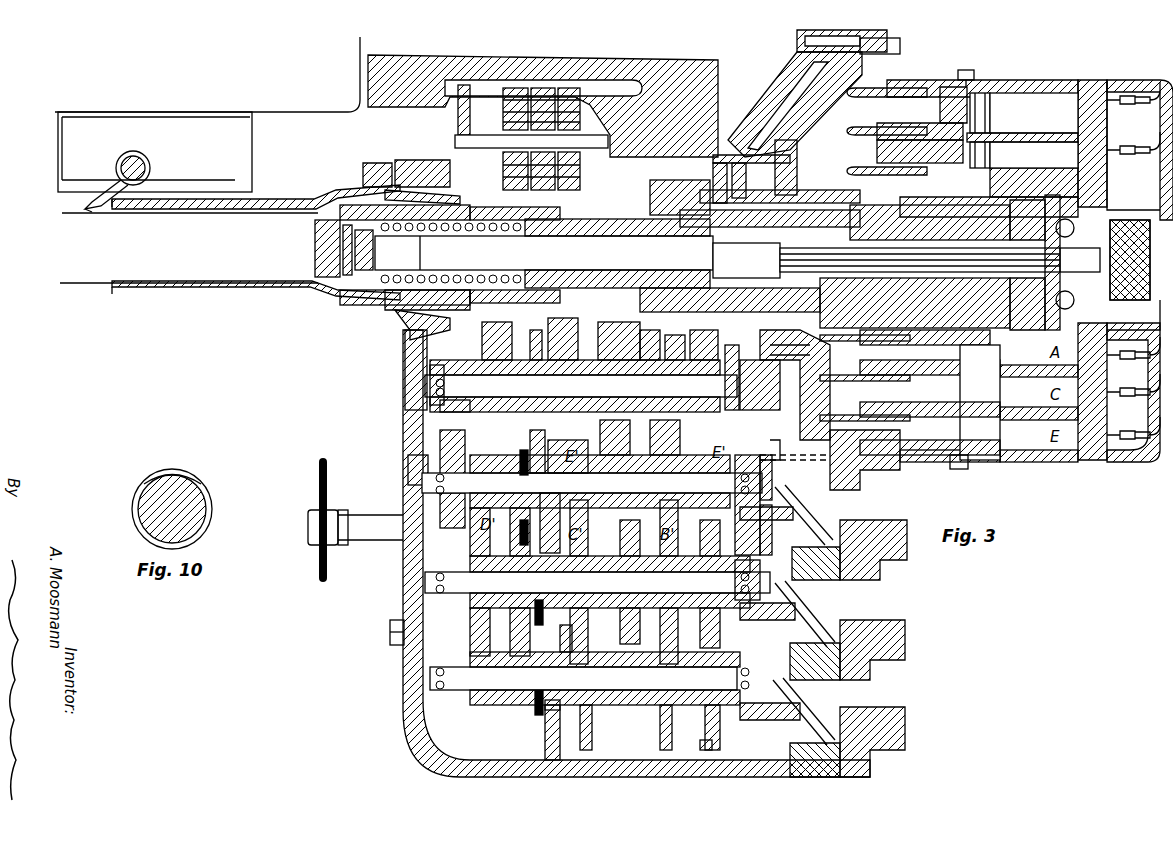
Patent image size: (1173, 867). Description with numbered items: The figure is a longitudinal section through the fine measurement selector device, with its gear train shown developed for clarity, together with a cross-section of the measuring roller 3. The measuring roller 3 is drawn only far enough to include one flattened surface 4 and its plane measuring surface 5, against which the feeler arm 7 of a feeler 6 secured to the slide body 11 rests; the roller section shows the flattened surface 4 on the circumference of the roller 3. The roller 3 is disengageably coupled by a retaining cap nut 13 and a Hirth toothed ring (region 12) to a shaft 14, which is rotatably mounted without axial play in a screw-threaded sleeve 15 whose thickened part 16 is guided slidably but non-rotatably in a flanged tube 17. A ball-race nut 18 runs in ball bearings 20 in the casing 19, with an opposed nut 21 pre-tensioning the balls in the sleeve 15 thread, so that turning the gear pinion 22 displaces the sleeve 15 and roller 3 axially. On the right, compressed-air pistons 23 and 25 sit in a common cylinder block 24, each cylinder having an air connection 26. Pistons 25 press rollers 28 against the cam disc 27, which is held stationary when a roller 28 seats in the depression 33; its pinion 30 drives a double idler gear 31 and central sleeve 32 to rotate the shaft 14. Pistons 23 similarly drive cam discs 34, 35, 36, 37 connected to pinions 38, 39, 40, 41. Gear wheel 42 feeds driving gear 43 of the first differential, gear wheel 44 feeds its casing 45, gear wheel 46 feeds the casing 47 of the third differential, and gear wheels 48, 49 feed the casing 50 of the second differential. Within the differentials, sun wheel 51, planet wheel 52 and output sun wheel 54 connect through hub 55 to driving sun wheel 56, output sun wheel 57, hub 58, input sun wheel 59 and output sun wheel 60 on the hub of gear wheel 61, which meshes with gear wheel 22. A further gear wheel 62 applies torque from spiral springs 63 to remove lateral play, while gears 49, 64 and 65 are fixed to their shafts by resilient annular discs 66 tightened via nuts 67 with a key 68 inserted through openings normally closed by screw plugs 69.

In FIG. 3, the measuring roller 3 is at (103, 273).
In FIG. 10, the measuring roller 3 is at (188, 486).
In FIG. 3, the flattened surface 4 is at (85, 207).
In FIG. 10, the flattened surface 4 is at (148, 498).
In FIG. 3, the measuring surface 5 is at (90, 208).
In FIG. 3, the feeler 6 is at (114, 118).
In FIG. 3, the feeler arm 7 is at (105, 185).
In FIG. 3, the slide body 11 is at (300, 100).
In FIG. 3, the hub 12 is at (318, 270).
In FIG. 3, the retaining cap nut 13 is at (345, 278).
In FIG. 3, the shaft 14 is at (360, 280).
In FIG. 3, the screw-threaded sleeve 15 is at (635, 233).
In FIG. 3, the thickened part 16 is at (720, 225).
In FIG. 3, the flanged tube 17 is at (595, 222).
In FIG. 3, the nut 18 is at (395, 305).
In FIG. 3, the casing 19 is at (405, 75).
In FIG. 3, the ball bearings 20 is at (412, 335).
In FIG. 3, the bearing ring 21 is at (530, 214).
In FIG. 3, the gear pinion 22 is at (466, 208).
In FIG. 3, the compressed-air-operated piston 23 is at (978, 95).
In FIG. 3, the cylinder block 24 is at (1032, 85).
In FIG. 3, the piston 25 is at (965, 355).
In FIG. 3, the connection 26 is at (1127, 96).
In FIG. 3, the cam disc 27 is at (968, 72).
In FIG. 3, the roller 28 is at (880, 345).
In FIG. 3, the pinion 30 is at (945, 300).
In FIG. 3, the double idler gear 31 is at (1035, 165).
In FIG. 3, the central sleeve 32 is at (1010, 290).
In FIG. 3, the depression 33 is at (805, 440).
In FIG. 3, the cam disc 34 is at (958, 469).
In FIG. 3, the cam disc 35 is at (925, 138).
In FIG. 3, the cam disc 36 is at (900, 420).
In FIG. 3, the cam disc 37 is at (905, 90).
In FIG. 3, the pinion 38 is at (718, 140).
In FIG. 3, the pinion 39 is at (722, 160).
In FIG. 3, the pinion 40 is at (740, 165).
In FIG. 3, the pinion 41 is at (760, 150).
In FIG. 3, the gear wheel 42 is at (715, 360).
In FIG. 3, the driving gear 43 is at (728, 345).
In FIG. 3, the gear wheel 44 is at (722, 705).
In FIG. 3, the differential casing 45 is at (610, 440).
In FIG. 3, the gear wheel 46 is at (730, 605).
In FIG. 3, the differential casing 47 is at (470, 445).
In FIG. 3, the gear wheel 48 is at (745, 510).
In FIG. 3, the gear wheel 49 is at (548, 515).
In FIG. 3, the differential casing 50 is at (535, 455).
In FIG. 3, the sun wheel 51 is at (700, 330).
In FIG. 3, the planet wheel 52 is at (672, 335).
In FIG. 3, the output sun wheel 54 is at (648, 328).
In FIG. 3, the hub 55 is at (610, 320).
In FIG. 3, the driving sun wheel 56 is at (575, 355).
In FIG. 3, the output sun wheel 57 is at (545, 355).
In FIG. 3, the hub 58 is at (530, 325).
In FIG. 3, the input sun wheel 59 is at (445, 405).
In FIG. 3, the output sun wheel 60 is at (440, 380).
In FIG. 3, the gear wheel 61 is at (440, 360).
In FIG. 3, the gear wheel 62 is at (464, 85).
In FIG. 3, the spiral springs 63 is at (510, 88).
In FIG. 3, the gear teeth 64 is at (512, 625).
In FIG. 3, the gear teeth 65 is at (548, 705).
In FIG. 3, the resilient annular disc 66 is at (522, 510).
In FIG. 3, the nut 67 is at (410, 445).
In FIG. 3, the key 68 is at (330, 518).
In FIG. 3, the screw plug 69 is at (392, 640).